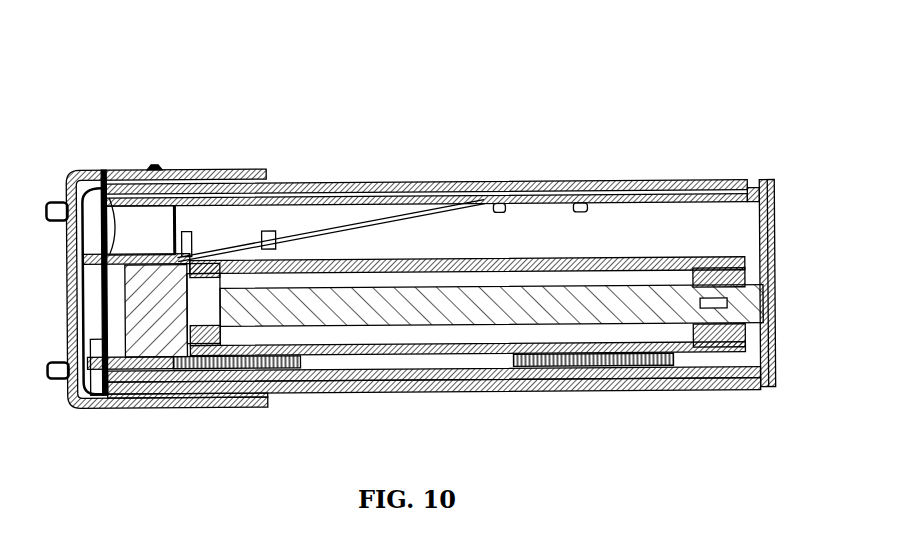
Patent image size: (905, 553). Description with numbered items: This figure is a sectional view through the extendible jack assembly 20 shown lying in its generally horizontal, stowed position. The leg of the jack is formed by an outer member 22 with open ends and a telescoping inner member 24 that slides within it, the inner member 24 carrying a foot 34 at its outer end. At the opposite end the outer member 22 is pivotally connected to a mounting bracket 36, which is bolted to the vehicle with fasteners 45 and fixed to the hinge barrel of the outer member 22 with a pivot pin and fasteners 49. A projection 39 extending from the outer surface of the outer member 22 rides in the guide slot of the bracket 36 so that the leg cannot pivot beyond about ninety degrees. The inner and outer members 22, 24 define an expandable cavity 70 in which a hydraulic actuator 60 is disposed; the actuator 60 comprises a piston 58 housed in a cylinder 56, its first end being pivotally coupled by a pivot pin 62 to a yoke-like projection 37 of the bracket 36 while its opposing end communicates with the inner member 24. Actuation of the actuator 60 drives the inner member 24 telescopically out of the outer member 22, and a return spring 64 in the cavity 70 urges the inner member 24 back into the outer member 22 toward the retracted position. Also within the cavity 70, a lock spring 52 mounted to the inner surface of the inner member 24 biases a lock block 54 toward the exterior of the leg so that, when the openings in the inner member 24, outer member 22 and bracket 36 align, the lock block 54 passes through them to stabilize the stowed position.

The jack assembly 20 is at (718, 104).
The outer member 22 is at (420, 391).
The inner member 24 is at (477, 381).
The foot 34 is at (767, 188).
The mounting bracket 36 is at (215, 408).
The yoke-like projection 37 is at (96, 172).
The projection 39 is at (153, 167).
The fasteners 45 is at (53, 218).
The fasteners 49 is at (113, 408).
The lock spring 52 is at (360, 222).
The lock block 54 is at (222, 219).
The cylinder 56 is at (434, 266).
The piston 58 is at (503, 300).
The hydraulic actuator 60 is at (690, 248).
The pivot pin 62 is at (152, 254).
The return spring 64 is at (290, 382).
The expandable cavity 70 is at (645, 228).